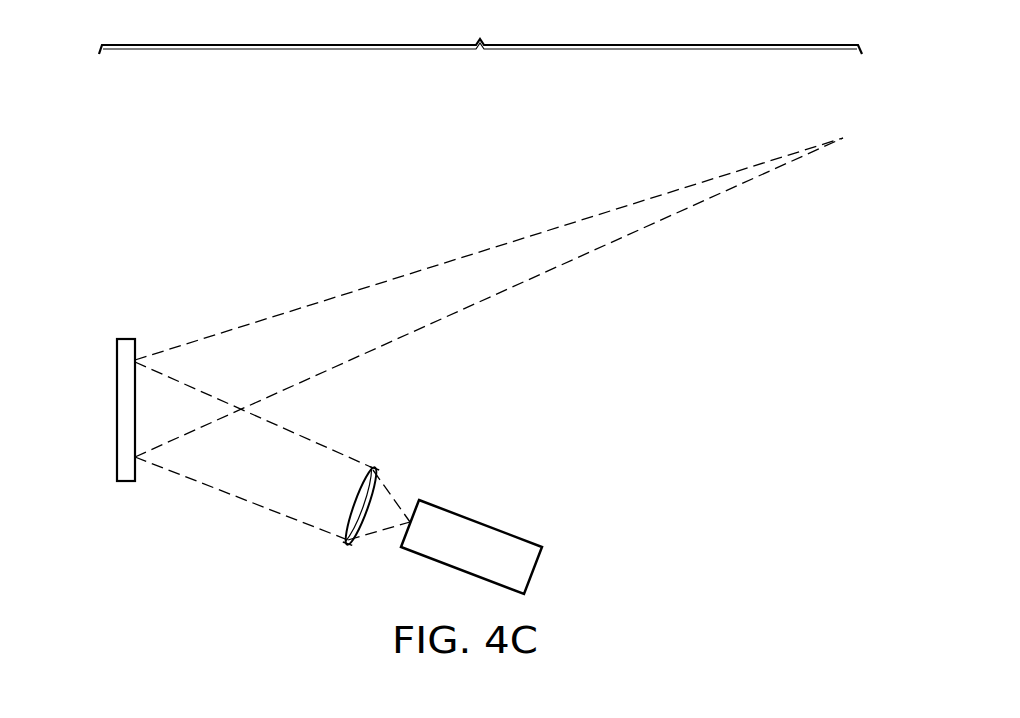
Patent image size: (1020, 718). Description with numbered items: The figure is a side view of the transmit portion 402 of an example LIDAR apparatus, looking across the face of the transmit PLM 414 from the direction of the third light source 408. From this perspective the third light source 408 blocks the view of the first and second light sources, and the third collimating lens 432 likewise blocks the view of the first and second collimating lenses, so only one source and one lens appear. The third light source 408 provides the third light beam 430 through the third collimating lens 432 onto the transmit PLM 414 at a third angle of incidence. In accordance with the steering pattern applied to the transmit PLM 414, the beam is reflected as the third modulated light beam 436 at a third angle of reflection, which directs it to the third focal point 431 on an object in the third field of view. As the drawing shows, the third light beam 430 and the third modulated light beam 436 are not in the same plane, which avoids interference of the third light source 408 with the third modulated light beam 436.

The transmit portion 402 is at (480, 30).
The transmit PLM 414 is at (116, 408).
The third modulated light beam 436 is at (490, 250).
The third focal point 431 is at (845, 137).
The third light beam 430 is at (246, 497).
The third collimating lens 432 is at (348, 546).
The third light source 408 is at (480, 522).